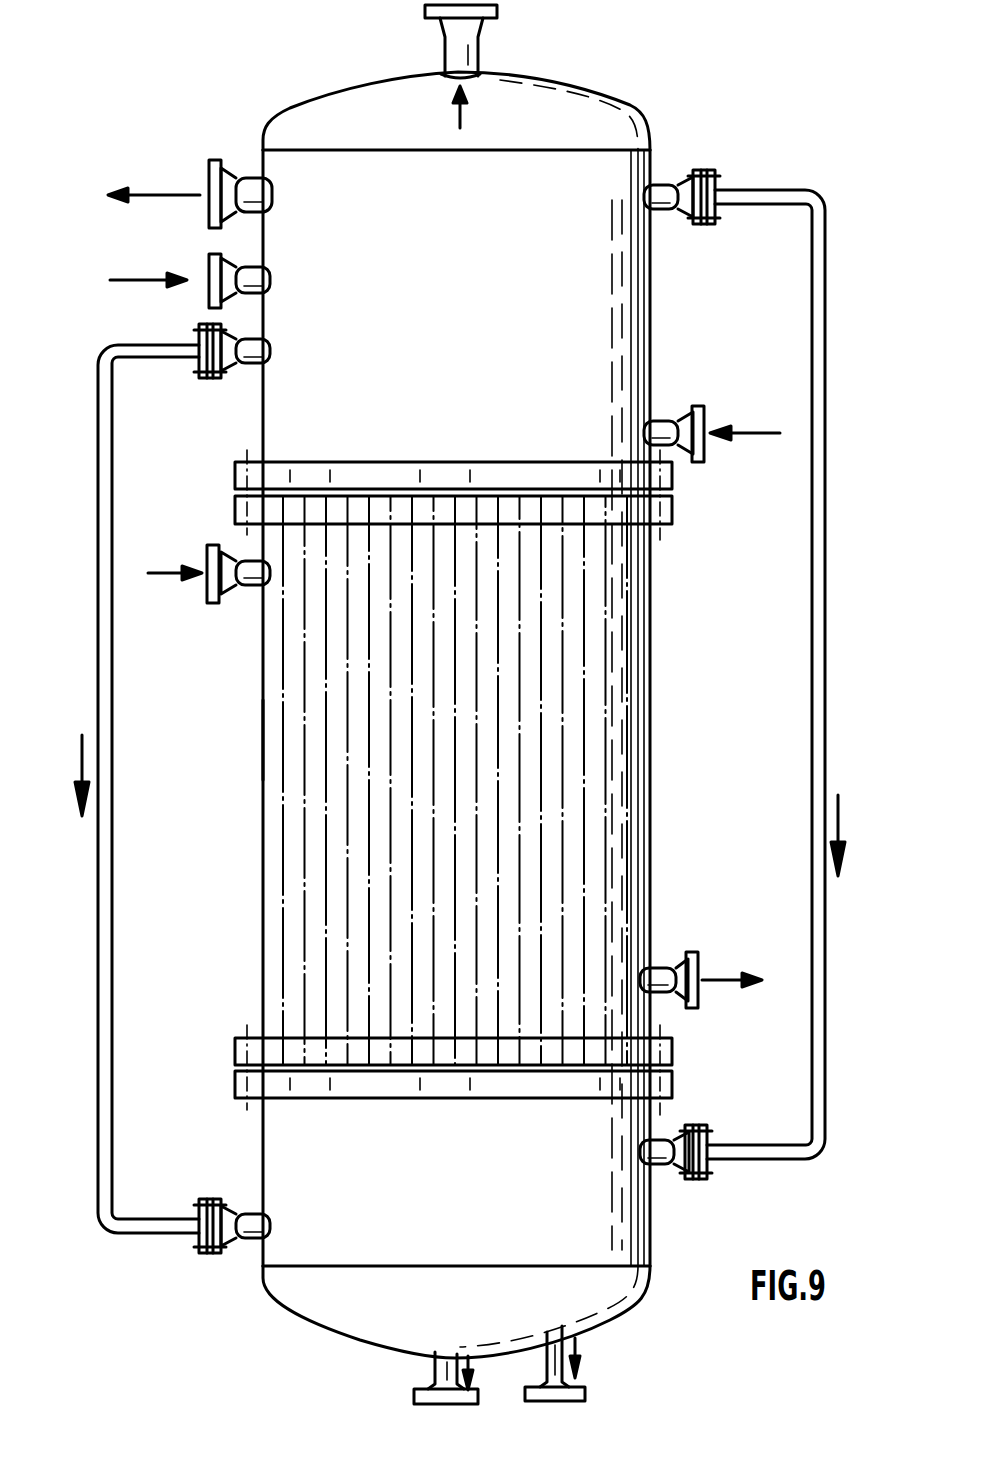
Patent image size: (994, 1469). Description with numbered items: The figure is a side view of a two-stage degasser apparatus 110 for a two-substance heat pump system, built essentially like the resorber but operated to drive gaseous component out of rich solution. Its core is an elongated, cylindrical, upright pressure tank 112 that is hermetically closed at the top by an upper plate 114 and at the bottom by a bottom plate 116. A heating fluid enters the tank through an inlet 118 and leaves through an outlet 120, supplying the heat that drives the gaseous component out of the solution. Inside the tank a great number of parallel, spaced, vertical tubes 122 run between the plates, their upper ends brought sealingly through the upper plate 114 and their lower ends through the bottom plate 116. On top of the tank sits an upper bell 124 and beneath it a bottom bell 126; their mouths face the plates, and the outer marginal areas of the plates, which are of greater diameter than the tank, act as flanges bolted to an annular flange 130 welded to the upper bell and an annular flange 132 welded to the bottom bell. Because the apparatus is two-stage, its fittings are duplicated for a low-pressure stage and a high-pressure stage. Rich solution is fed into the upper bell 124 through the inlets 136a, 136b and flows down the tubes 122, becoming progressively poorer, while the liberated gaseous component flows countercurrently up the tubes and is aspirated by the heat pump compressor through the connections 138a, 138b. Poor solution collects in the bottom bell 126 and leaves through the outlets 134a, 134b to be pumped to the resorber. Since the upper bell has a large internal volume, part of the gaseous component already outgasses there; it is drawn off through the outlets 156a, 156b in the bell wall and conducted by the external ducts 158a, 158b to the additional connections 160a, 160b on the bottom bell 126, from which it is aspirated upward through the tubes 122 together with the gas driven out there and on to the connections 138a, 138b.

The degasser apparatus 110 is at (670, 687).
The pressure tank 112 is at (262, 742).
The upper plate 114 is at (673, 516).
The bottom plate 116 is at (673, 1050).
The inlet 118 is at (248, 584).
The outlet 120 is at (662, 966).
The tubes 122 is at (347, 870).
The upper bell 124 is at (652, 300).
The bottom bell 126 is at (262, 1160).
The annular flange 130 is at (240, 470).
The annular flange 132 is at (240, 1088).
The outlet 134a is at (566, 1345).
The outlet 134b is at (436, 1368).
The inlet 136a is at (666, 424).
The inlet 136b is at (245, 280).
The connection 138a is at (252, 183).
The connection 138b is at (445, 45).
The outlet 156a is at (243, 360).
The outlet 156b is at (666, 190).
The duct 158a is at (112, 882).
The duct 158b is at (812, 733).
The connection 160a is at (242, 1241).
The connection 160b is at (660, 1166).